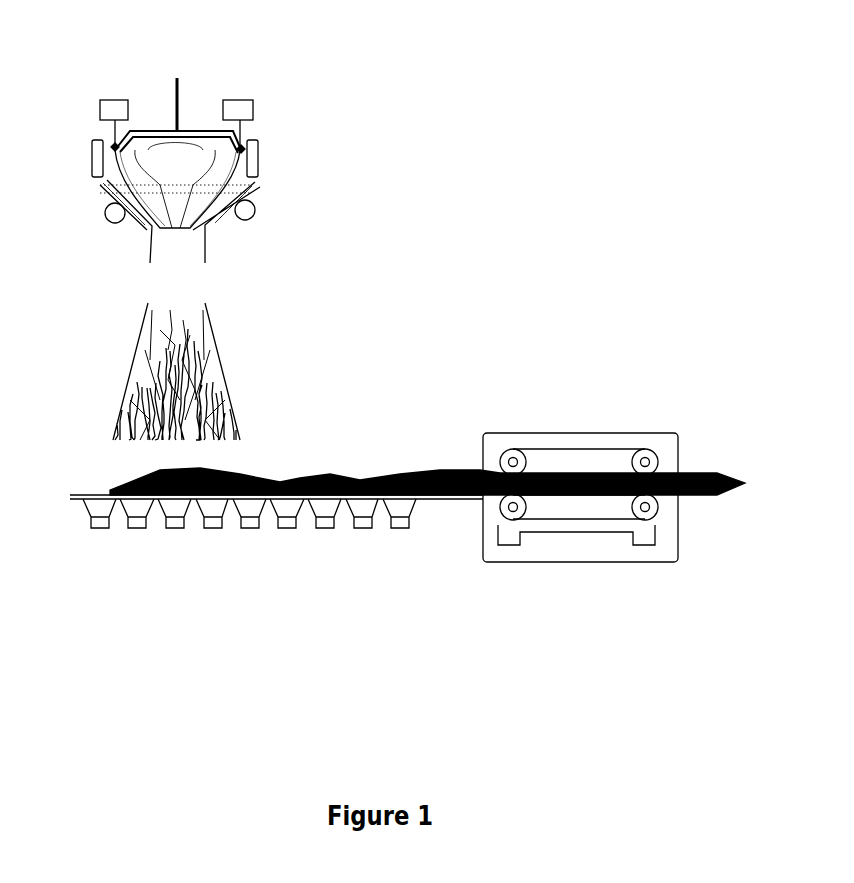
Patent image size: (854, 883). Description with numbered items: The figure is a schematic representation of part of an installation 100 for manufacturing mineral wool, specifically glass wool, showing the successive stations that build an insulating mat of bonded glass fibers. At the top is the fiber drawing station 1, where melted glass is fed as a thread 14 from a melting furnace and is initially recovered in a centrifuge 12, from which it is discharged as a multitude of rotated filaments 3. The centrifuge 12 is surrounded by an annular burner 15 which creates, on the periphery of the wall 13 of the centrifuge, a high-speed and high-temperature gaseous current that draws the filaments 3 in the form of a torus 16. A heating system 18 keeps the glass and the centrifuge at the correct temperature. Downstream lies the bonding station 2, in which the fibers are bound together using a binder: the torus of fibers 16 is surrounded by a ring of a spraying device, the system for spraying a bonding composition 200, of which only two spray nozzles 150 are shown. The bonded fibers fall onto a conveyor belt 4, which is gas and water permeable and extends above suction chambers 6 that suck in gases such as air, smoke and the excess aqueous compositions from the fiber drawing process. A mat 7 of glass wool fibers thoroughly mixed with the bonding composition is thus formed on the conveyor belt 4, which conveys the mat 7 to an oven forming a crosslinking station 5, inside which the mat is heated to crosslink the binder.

The installation 100 is at (460, 324).
The fiber drawing station 1 is at (229, 80).
The bonding station 2 is at (291, 156).
The filaments 3 is at (215, 168).
The centrifuge 12 is at (166, 116).
The wall of the centrifuge 13 is at (150, 130).
The thread 14 is at (183, 117).
The annular burner 15 is at (234, 97).
The torus 16 is at (175, 158).
The heating system 18 is at (93, 152).
The spray nozzles 150 is at (105, 198).
The system for spraying a bonding composition 200 is at (278, 226).
The mat 7 is at (307, 470).
The conveyor belt 4 is at (85, 497).
The suction chambers 6 is at (210, 510).
The crosslinking station 5 is at (558, 435).